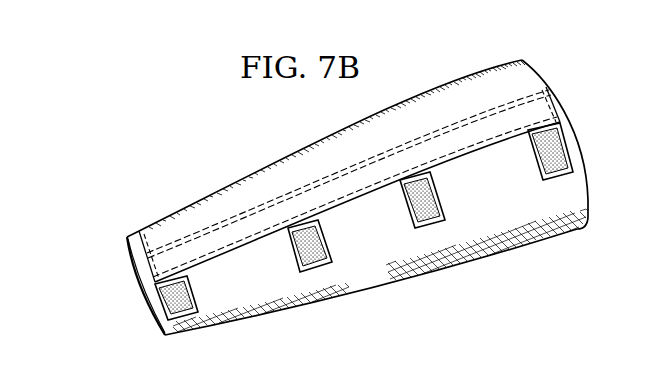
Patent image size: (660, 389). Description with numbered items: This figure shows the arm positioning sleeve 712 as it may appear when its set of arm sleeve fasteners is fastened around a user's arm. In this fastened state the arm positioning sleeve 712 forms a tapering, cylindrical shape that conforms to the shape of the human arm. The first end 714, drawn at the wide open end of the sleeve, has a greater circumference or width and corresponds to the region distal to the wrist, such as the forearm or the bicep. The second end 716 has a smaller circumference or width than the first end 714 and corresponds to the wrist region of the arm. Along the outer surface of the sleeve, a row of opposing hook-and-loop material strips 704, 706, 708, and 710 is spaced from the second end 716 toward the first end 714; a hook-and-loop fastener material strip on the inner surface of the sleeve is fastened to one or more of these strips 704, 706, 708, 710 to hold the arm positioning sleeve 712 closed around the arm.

The arm positioning sleeve 712 is at (240, 184).
The first end 714 is at (143, 306).
The second end 716 is at (548, 90).
The hook-and-loop material strip 704 is at (539, 152).
The hook-and-loop material strip 706 is at (433, 206).
The hook-and-loop material strip 708 is at (318, 249).
The hook-and-loop material strip 710 is at (184, 293).